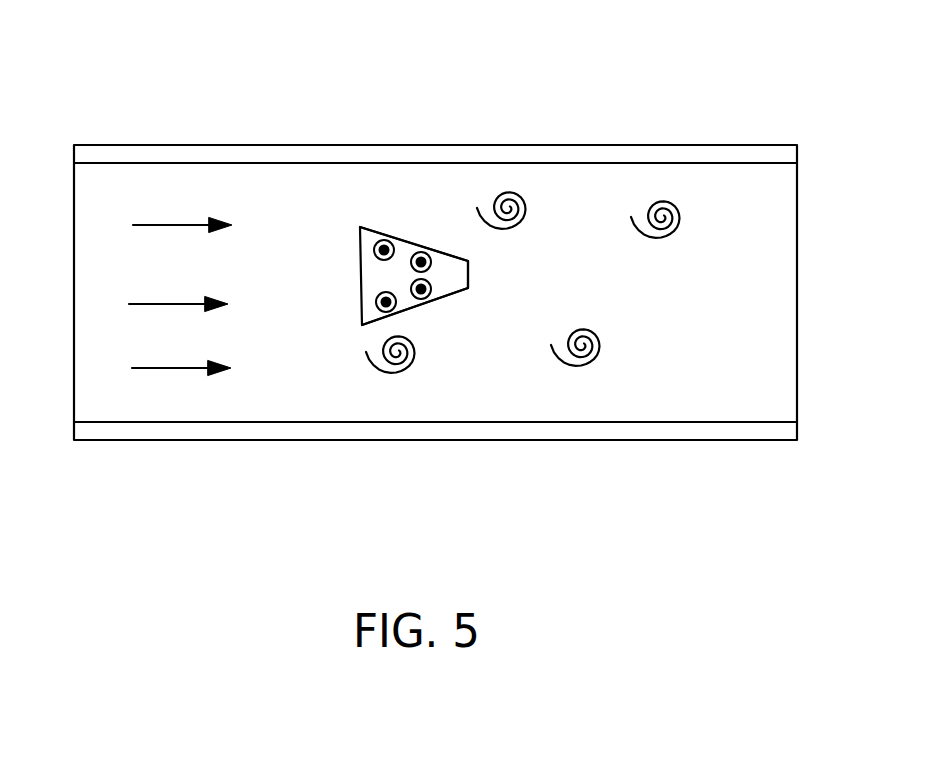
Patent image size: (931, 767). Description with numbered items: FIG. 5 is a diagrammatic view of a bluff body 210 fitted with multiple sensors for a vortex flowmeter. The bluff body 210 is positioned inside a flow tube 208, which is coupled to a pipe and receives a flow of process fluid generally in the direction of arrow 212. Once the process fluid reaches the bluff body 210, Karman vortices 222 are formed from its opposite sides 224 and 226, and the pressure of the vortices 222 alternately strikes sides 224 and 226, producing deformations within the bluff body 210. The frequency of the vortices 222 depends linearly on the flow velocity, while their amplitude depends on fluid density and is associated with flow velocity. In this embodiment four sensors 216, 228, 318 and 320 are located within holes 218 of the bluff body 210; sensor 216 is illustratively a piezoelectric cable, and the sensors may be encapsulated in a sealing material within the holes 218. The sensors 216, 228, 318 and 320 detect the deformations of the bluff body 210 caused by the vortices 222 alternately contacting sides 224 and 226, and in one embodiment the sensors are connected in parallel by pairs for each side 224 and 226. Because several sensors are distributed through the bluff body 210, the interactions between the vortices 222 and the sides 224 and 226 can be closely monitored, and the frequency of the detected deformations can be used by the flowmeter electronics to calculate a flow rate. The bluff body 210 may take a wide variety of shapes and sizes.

The flow tube 208 is at (598, 142).
The bluff body 210 is at (408, 248).
The arrow 212 is at (182, 369).
The sensor 216 is at (379, 236).
The hole 218 is at (380, 234).
The Karman vortices 222 is at (590, 363).
The side of bluff body 224 is at (450, 263).
The side of bluff body 226 is at (450, 295).
The sensor 228 is at (375, 303).
The sensor 318 is at (468, 273).
The sensor 320 is at (427, 297).